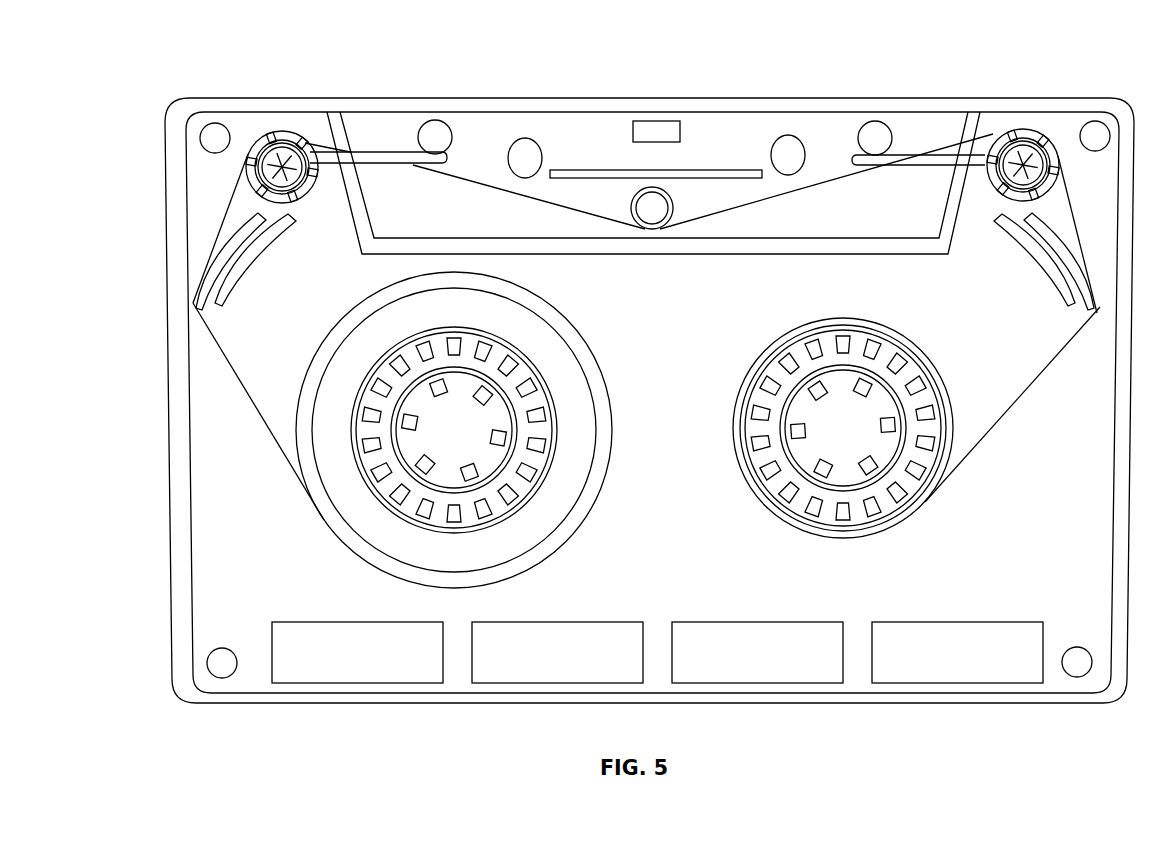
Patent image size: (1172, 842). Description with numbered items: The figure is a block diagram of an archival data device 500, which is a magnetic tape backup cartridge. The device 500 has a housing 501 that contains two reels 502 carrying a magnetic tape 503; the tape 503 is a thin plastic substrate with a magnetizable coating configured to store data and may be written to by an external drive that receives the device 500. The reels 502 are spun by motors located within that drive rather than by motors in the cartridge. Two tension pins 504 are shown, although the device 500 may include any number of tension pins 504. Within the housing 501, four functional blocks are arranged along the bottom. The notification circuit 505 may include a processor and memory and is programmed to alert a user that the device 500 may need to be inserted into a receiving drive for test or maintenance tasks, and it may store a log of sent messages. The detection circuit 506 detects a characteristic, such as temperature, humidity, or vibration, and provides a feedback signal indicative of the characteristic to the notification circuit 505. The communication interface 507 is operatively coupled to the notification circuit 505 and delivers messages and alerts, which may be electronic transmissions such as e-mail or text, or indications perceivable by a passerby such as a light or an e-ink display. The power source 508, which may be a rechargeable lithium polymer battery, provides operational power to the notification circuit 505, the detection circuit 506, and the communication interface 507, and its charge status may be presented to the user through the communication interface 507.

The archival data device 500 is at (170, 58).
The housing 501 is at (295, 98).
The reels 502 is at (383, 362).
The magnetic tape 503 is at (472, 183).
The tension pins 504 is at (1094, 120).
The notification circuit 505 is at (317, 621).
The detection circuit 506 is at (517, 621).
The communication interface 507 is at (716, 621).
The power source 508 is at (915, 621).